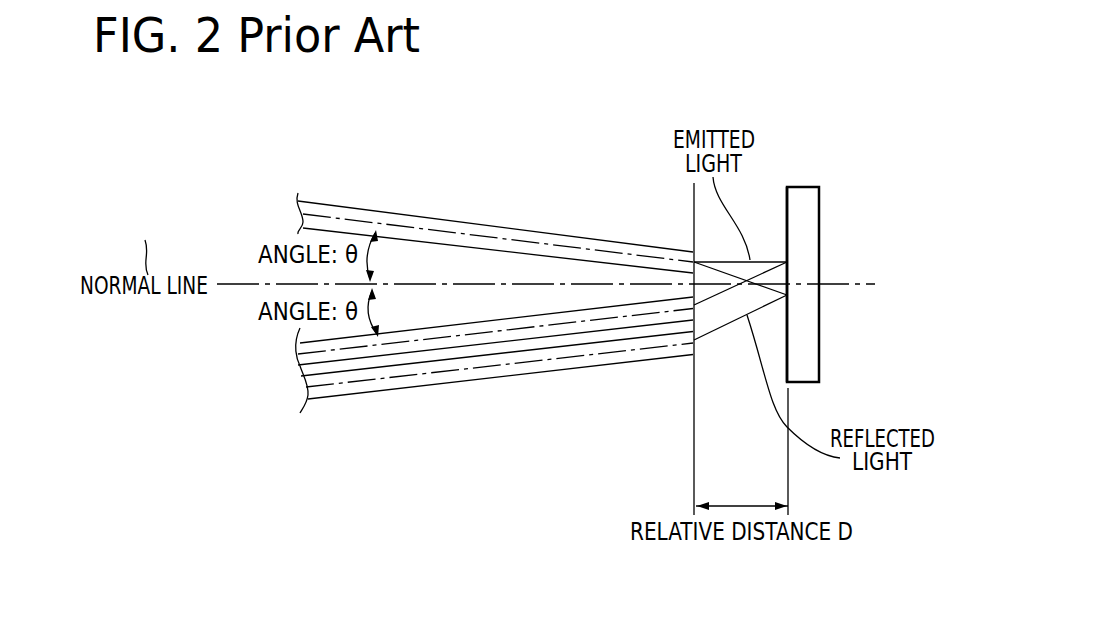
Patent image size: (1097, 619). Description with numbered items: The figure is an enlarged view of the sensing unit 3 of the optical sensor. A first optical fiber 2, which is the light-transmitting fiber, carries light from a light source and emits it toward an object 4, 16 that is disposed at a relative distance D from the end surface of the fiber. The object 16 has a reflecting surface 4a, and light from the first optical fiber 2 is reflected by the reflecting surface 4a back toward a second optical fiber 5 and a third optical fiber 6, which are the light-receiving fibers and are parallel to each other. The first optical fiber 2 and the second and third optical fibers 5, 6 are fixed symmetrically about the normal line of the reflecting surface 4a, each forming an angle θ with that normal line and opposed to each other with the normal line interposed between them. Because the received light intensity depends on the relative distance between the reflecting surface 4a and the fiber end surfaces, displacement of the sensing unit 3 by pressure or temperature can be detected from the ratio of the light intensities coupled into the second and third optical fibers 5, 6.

The first optical fiber 2 is at (475, 224).
The sensing unit 3 is at (573, 208).
The object 4 is at (843, 239).
The reflecting surface 4a is at (783, 223).
The second optical fiber 5 is at (523, 340).
The third optical fiber 6 is at (445, 387).
The object 16 is at (821, 207).